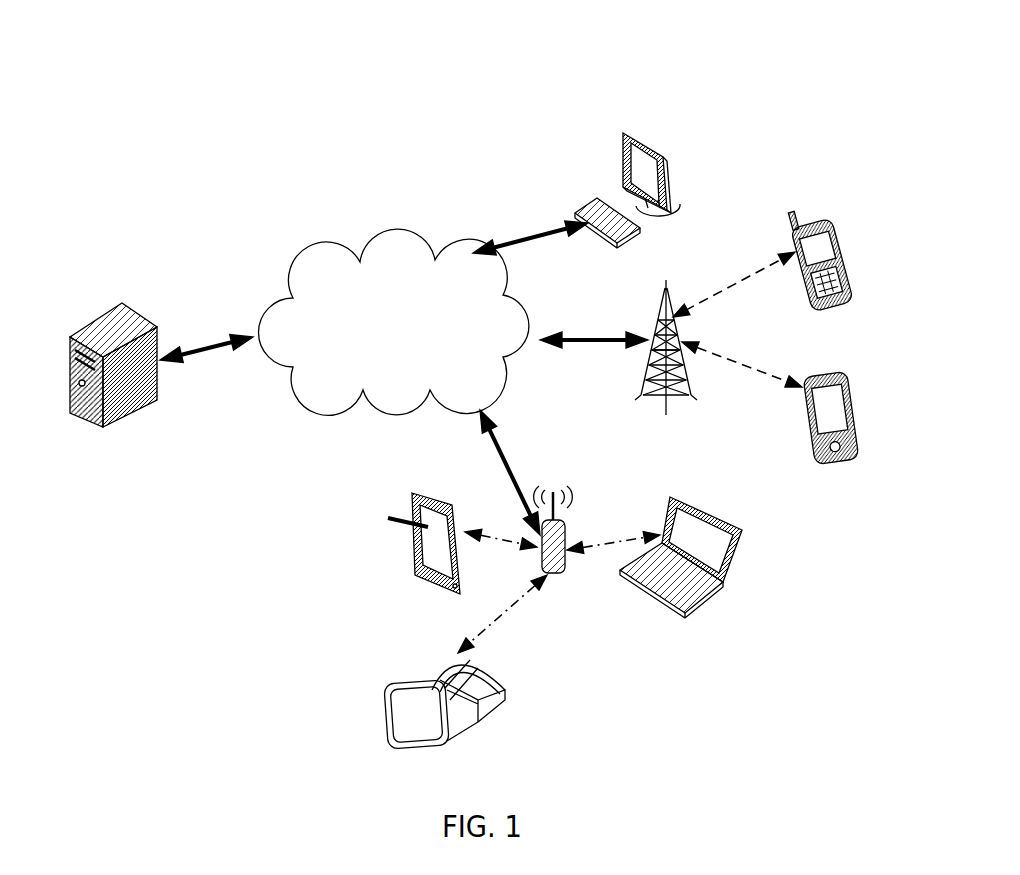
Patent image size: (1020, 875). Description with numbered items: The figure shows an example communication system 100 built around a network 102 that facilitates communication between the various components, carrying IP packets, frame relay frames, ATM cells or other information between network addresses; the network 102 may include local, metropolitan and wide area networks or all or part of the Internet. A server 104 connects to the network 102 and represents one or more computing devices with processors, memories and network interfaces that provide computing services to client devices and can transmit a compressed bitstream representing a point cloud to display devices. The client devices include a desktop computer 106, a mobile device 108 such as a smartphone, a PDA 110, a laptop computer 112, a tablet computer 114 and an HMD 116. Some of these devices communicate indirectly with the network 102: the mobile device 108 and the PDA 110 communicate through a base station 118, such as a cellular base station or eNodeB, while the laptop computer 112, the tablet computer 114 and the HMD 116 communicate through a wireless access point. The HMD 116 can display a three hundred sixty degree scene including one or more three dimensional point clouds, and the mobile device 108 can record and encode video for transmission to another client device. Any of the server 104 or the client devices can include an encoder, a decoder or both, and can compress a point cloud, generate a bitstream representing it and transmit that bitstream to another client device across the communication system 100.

The communication system 100 is at (815, 83).
The network 102 is at (394, 322).
The server 104 is at (93, 322).
The desktop computer 106 is at (620, 152).
The mobile device 108 is at (850, 250).
The PDA 110 is at (842, 383).
The laptop computer 112 is at (742, 542).
The tablet computer 114 is at (415, 495).
The HMD 116 is at (692, 377).
The base station 118 is at (570, 503).